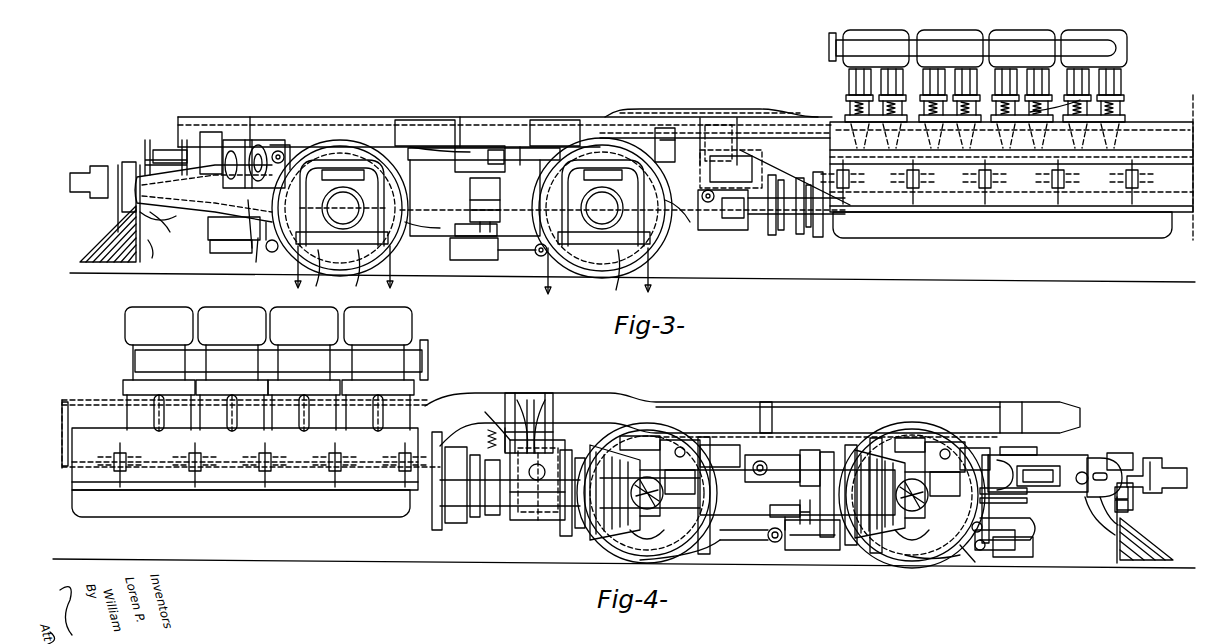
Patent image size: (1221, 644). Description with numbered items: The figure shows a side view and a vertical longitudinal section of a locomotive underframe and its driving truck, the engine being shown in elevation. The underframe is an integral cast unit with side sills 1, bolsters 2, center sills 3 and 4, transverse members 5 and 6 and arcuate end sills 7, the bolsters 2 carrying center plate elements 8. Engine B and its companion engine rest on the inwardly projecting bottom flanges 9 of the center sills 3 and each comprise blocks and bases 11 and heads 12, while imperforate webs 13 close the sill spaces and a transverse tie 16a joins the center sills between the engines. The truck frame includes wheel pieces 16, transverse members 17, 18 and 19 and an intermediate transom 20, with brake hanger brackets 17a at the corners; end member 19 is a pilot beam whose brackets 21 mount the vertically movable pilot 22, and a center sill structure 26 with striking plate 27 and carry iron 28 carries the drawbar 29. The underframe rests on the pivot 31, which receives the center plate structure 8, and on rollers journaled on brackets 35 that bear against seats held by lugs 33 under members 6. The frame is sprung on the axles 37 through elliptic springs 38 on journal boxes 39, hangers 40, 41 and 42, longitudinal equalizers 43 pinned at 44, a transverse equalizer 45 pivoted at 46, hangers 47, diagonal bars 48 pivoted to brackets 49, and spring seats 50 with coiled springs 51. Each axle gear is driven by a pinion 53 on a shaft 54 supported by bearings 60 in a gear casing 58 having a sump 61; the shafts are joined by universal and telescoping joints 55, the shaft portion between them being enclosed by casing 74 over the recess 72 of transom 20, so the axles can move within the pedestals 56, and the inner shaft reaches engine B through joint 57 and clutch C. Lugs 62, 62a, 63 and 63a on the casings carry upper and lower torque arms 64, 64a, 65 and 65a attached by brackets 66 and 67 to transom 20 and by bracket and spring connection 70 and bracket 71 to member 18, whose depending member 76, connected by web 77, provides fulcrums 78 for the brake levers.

In FIG. 3, the side sills 1 is at (1150, 138).
In FIG. 4, the bolsters 2 is at (552, 412).
In FIG. 4, the center sills 3 is at (86, 402).
In FIG. 4, the center sills 4 is at (832, 402).
In FIG. 3, the transverse members 5 is at (478, 122).
In FIG. 4, the transverse members 5 is at (775, 402).
In FIG. 4, the transverse members 6 is at (1015, 403).
In FIG. 4, the arcuate end sills 7 is at (1078, 413).
In FIG. 3, the center plate elements 8 is at (716, 148).
In FIG. 4, the center plate elements 8 is at (508, 412).
In FIG. 4, the bottom flanges 9 is at (100, 472).
In FIG. 3, the blocks and bases 11 is at (1085, 100).
In FIG. 4, the blocks and bases 11 is at (215, 416).
In FIG. 4, the heads 12 is at (188, 296).
In FIG. 3, the imperforate webs 13 is at (1020, 208).
In FIG. 3, the wheel pieces 16 is at (412, 255).
In FIG. 4, the wheel pieces 16 is at (806, 522).
In FIG. 4, the transverse tie 16a is at (63, 400).
In FIG. 3, the transverse end member 17 is at (345, 274).
In FIG. 4, the transverse end member 17 is at (546, 442).
In FIG. 3, the brake hanger brackets 17a is at (682, 227).
In FIG. 3, the transverse end member 18 is at (599, 278).
In FIG. 4, the transverse end member 18 is at (1015, 503).
In FIG. 3, the end member 19 is at (167, 222).
In FIG. 4, the end member 19 is at (1110, 452).
In FIG. 3, the intermediate transom 20 is at (462, 150).
In FIG. 4, the intermediate transom 20 is at (770, 512).
In FIG. 3, the brackets 21 is at (158, 256).
In FIG. 4, the brackets 21 is at (1105, 526).
In FIG. 3, the pilot 22 is at (110, 262).
In FIG. 4, the pilot 22 is at (1155, 546).
In FIG. 3, the center sill structure 26 is at (190, 150).
In FIG. 4, the center sill structure 26 is at (1092, 456).
In FIG. 3, the striking plate 27 is at (120, 160).
In FIG. 4, the striking plate 27 is at (1120, 453).
In FIG. 3, the carry iron 28 is at (124, 202).
In FIG. 4, the carry iron 28 is at (1130, 509).
In FIG. 3, the drawbar 29 is at (112, 168).
In FIG. 4, the drawbar 29 is at (1150, 465).
In FIG. 3, the pivot 31 is at (755, 156).
In FIG. 4, the pivot 31 is at (526, 476).
In FIG. 3, the lugs 33 is at (214, 134).
In FIG. 3, the brackets 35 is at (262, 145).
In FIG. 4, the brackets 35 is at (548, 502).
In FIG. 3, the wheel axles 37 is at (240, 150).
In FIG. 4, the wheel axles 37 is at (779, 502).
In FIG. 3, the elliptic springs 38 is at (530, 132).
In FIG. 3, the journal boxes 39 is at (322, 246).
In FIG. 3, the hangers 40 is at (402, 138).
In FIG. 3, the hangers 41 is at (670, 135).
In FIG. 3, the hangers 42 is at (282, 150).
In FIG. 3, the longitudinal equalizers 43 is at (418, 228).
In FIG. 3, the pin 44 is at (486, 210).
In FIG. 3, the transverse equalizer 45 is at (782, 152).
In FIG. 4, the transverse equalizer 45 is at (498, 420).
In FIG. 4, the pivot 46 is at (486, 440).
In FIG. 3, the hangers 47 is at (776, 230).
In FIG. 3, the diagonal bars 48 is at (745, 232).
In FIG. 3, the brackets 49 is at (717, 232).
In FIG. 3, the spring hangers and seats 50 is at (270, 252).
In FIG. 3, the coiled springs 51 is at (250, 246).
In FIG. 4, the pinion 53 is at (596, 532).
In FIG. 4, the shaft 54 is at (662, 446).
In FIG. 4, the universal and telescoping joints 55 is at (708, 436).
In FIG. 3, the pedestals 56 is at (475, 275).
In FIG. 3, the universal and telescoping joint 57 is at (818, 238).
In FIG. 4, the universal and telescoping joint 57 is at (450, 502).
In FIG. 4, the gear casing 58 is at (606, 436).
In FIG. 4, the bearings 60 is at (566, 502).
In FIG. 4, the sump 61 is at (612, 540).
In FIG. 4, the lug 62 is at (647, 436).
In FIG. 4, the lug 62a is at (918, 436).
In FIG. 4, the lug 63 is at (625, 548).
In FIG. 4, the lug 63a is at (902, 566).
In FIG. 4, the upper torque arm 64 is at (674, 430).
In FIG. 3, the upper torque arm 64a is at (496, 152).
In FIG. 4, the upper torque arm 64a is at (950, 440).
In FIG. 4, the lower torque arm 65 is at (706, 548).
In FIG. 3, the lower torque arm 65a is at (522, 262).
In FIG. 4, the lower torque arm 65a is at (925, 562).
In FIG. 4, the bracket 66 is at (762, 455).
In FIG. 3, the bracket 67 is at (468, 262).
In FIG. 4, the bracket 67 is at (800, 551).
In FIG. 4, the bracket and spring connection 70 is at (1030, 455).
In FIG. 3, the bracket 71 is at (216, 250).
In FIG. 4, the bracket 71 is at (1036, 555).
In FIG. 4, the recess 72 is at (792, 516).
In FIG. 4, the casing 74 is at (747, 492).
In FIG. 3, the depending member 76 is at (218, 226).
In FIG. 4, the depending member 76 is at (1030, 530).
In FIG. 4, the web 77 is at (1000, 552).
In FIG. 4, the fulcrums 78 is at (966, 556).
In FIG. 4, the engine B is at (412, 402).
In FIG. 4, the clutch C is at (476, 518).